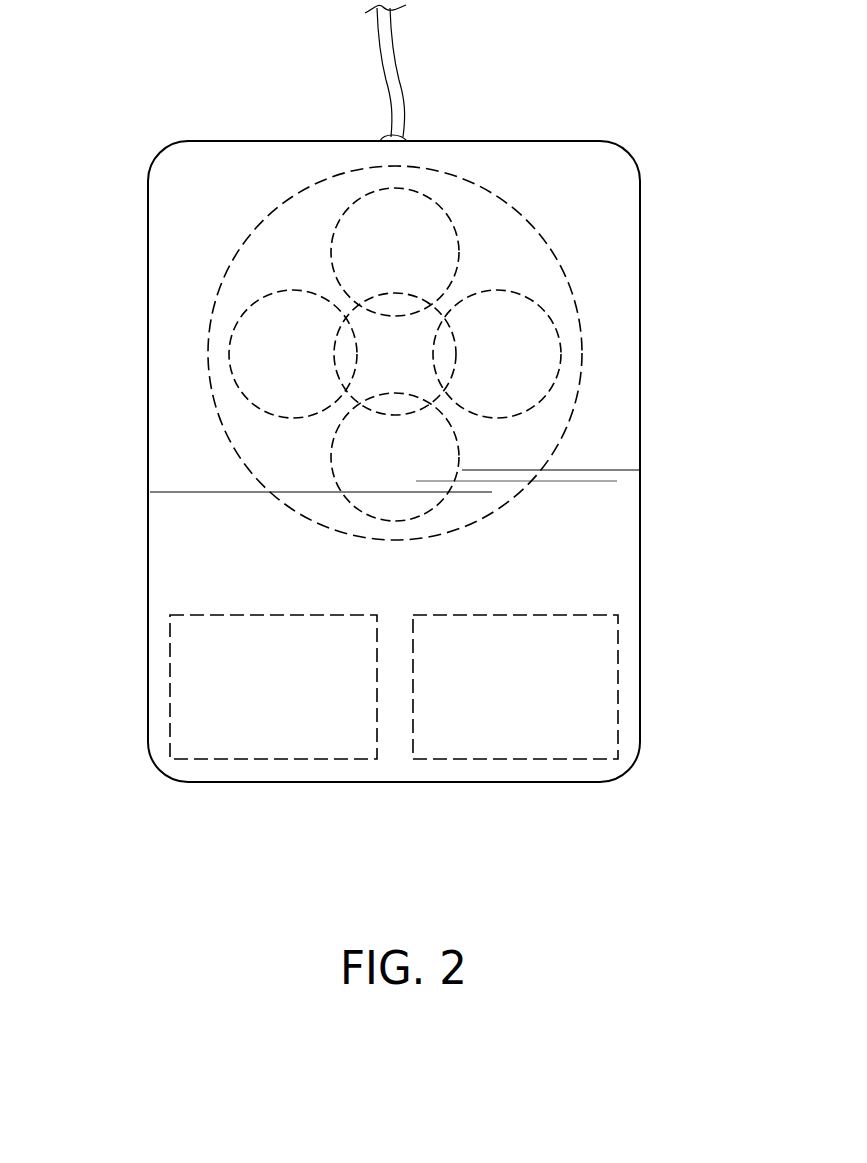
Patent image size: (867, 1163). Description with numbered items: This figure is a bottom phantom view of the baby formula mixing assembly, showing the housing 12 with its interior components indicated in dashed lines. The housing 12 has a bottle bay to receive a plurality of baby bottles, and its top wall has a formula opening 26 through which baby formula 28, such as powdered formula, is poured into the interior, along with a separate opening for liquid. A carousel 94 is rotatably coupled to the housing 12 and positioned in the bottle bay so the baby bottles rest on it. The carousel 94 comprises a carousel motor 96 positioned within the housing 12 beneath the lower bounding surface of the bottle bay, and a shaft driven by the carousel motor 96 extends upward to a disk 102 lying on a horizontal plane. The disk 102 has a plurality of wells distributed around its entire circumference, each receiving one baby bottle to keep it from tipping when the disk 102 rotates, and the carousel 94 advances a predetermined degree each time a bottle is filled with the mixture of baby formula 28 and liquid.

The housing 12 is at (631, 153).
The formula opening 26 is at (516, 762).
The baby formula 28 is at (265, 762).
The carousel 94 is at (175, 362).
The carousel motor 96 is at (340, 330).
The disk 102 is at (481, 192).